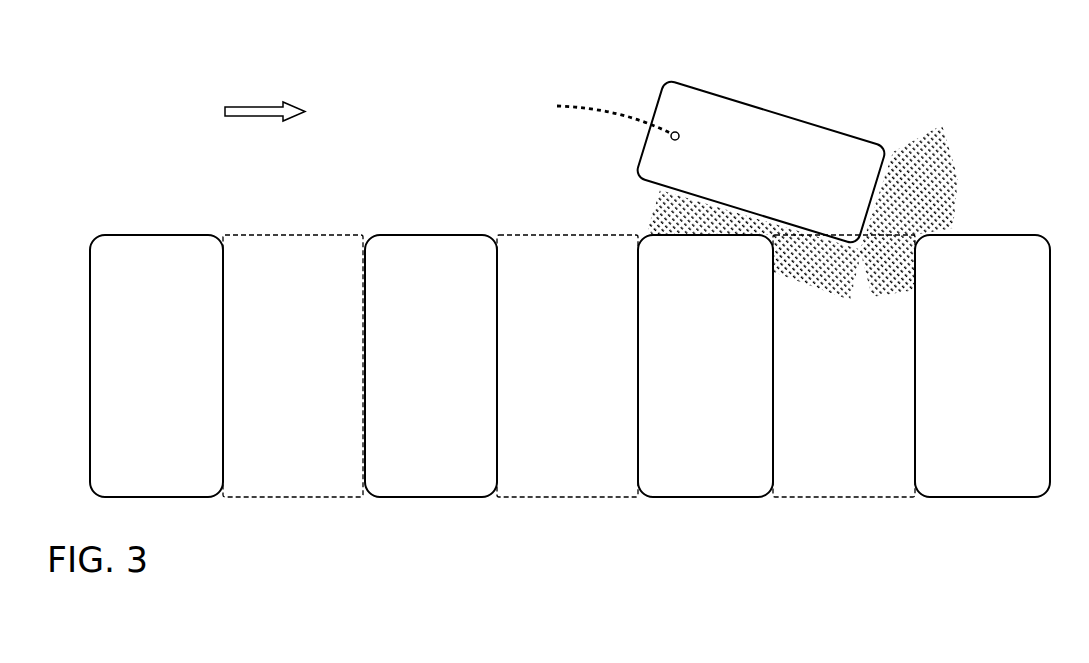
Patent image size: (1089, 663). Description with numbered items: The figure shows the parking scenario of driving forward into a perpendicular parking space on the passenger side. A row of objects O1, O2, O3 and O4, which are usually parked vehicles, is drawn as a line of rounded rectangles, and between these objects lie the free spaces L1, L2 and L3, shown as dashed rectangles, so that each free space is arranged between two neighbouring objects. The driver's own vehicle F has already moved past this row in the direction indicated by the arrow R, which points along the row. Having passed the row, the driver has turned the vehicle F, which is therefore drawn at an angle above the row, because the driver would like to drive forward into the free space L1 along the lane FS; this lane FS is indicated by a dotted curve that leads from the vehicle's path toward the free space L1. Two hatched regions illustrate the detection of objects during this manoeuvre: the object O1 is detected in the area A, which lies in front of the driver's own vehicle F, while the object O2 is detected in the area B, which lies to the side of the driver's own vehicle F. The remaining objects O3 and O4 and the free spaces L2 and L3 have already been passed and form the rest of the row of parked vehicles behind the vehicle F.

The arrow R is at (247, 110).
The driver's own vehicle F is at (723, 96).
The lane FS is at (606, 108).
The area in front of the driver's own vehicle A is at (909, 211).
The area to the side of the driver's own vehicle B is at (755, 245).
The object O1 is at (982, 366).
The object O2 is at (705, 366).
The object O3 is at (431, 366).
The object O4 is at (156, 366).
The free space L1 is at (844, 366).
The free space L2 is at (567, 366).
The free space L3 is at (293, 366).